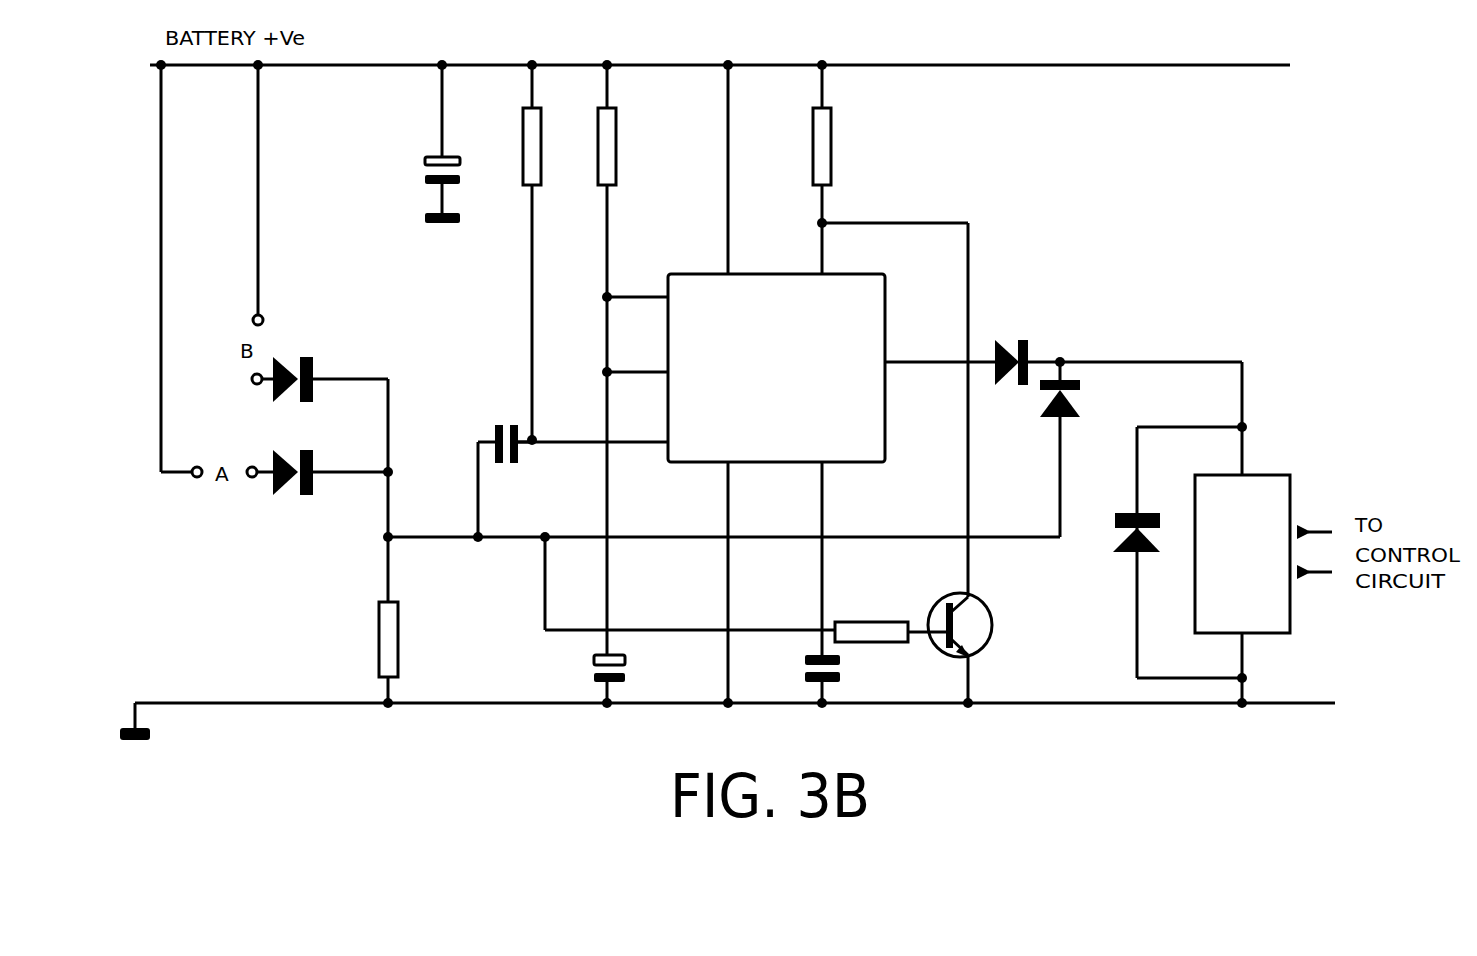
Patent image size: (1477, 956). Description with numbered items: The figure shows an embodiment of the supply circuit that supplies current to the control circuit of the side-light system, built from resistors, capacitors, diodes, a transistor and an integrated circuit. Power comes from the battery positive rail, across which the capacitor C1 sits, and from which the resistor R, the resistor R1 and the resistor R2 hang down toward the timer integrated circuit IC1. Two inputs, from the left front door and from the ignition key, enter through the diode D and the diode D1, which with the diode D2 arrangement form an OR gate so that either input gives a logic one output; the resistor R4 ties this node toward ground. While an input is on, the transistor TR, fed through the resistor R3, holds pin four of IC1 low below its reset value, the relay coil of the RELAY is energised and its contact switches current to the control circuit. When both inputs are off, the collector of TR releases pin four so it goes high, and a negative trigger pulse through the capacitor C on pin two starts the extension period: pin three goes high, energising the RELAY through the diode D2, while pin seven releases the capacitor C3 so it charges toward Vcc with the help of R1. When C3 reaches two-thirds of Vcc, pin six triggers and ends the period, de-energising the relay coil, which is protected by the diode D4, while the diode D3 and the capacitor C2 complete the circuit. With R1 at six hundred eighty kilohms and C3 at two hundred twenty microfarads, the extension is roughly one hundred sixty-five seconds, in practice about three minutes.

The capacitor C1 is at (407, 144).
The resistor R is at (507, 252).
The resistor R1 is at (635, 360).
The resistor R2 is at (798, 169).
The integrated circuit IC1 is at (776, 368).
The diode D is at (320, 362).
The diode D1 is at (317, 491).
The capacitor C is at (503, 417).
The diode D2 is at (1033, 346).
The diode D3 is at (1117, 449).
The diode D4 is at (1092, 544).
The relay RELAY is at (1242, 554).
The resistor R4 is at (364, 652).
The capacitor C3 is at (573, 672).
The capacitor C2 is at (791, 675).
The resistor R3 is at (881, 603).
The transistor TR is at (997, 648).